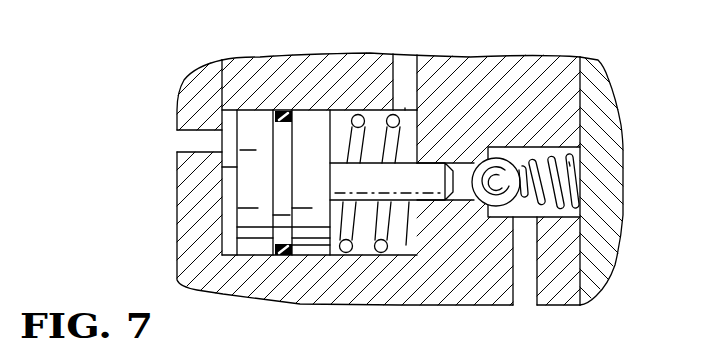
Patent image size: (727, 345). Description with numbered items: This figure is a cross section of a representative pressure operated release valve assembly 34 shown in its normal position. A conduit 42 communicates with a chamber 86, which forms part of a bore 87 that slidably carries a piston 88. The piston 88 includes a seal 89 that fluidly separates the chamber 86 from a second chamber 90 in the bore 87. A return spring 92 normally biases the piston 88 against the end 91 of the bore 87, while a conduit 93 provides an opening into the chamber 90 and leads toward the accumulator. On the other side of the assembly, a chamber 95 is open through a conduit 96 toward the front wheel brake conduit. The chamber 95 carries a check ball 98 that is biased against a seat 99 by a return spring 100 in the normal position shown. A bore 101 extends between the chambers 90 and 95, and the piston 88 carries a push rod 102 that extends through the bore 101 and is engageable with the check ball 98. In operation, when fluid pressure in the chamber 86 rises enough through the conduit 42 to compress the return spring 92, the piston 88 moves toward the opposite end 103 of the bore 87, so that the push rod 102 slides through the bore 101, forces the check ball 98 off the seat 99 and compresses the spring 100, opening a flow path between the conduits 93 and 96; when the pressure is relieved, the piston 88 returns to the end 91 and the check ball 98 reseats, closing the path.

The pressure operated release valve assembly 34 is at (605, 84).
The conduit 42 is at (182, 138).
The chamber 86 is at (230, 117).
The bore 87 is at (257, 250).
The piston 88 is at (257, 118).
The seal 89 is at (285, 120).
The chamber 90 is at (343, 120).
The end 91 is at (226, 208).
The return spring 92 is at (383, 252).
The conduit 93 is at (404, 63).
The chamber 95 is at (567, 212).
The conduit 96 is at (531, 253).
The check ball 98 is at (513, 185).
The seat 99 is at (500, 159).
The return spring 100 is at (573, 168).
The bore 101 is at (466, 162).
The push rod 102 is at (433, 190).
The end 103 is at (418, 131).